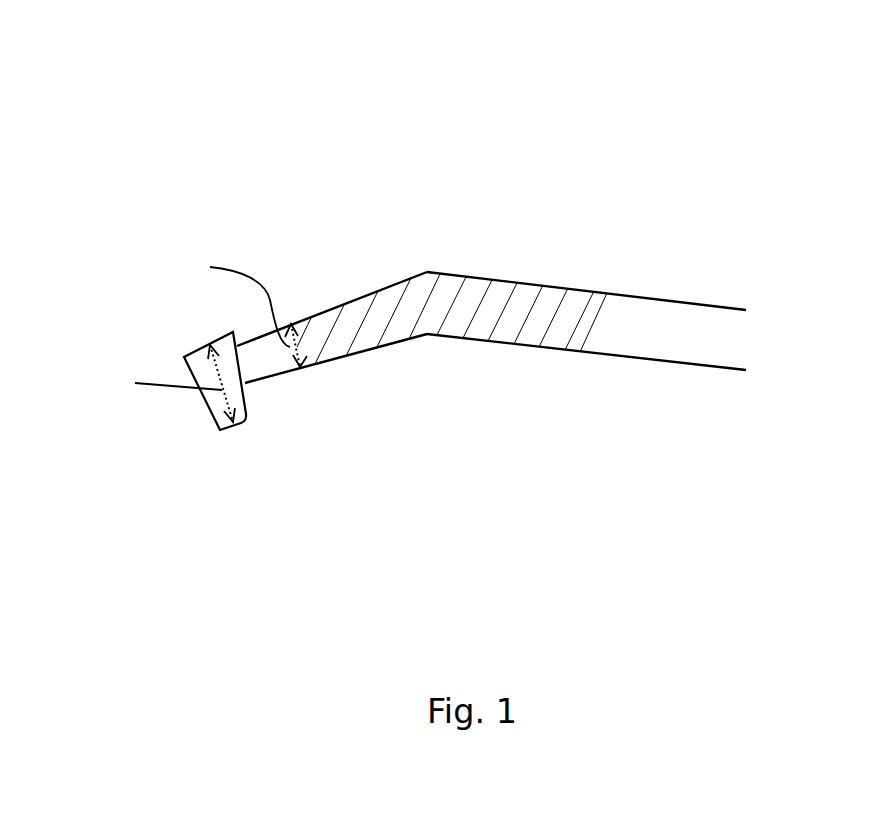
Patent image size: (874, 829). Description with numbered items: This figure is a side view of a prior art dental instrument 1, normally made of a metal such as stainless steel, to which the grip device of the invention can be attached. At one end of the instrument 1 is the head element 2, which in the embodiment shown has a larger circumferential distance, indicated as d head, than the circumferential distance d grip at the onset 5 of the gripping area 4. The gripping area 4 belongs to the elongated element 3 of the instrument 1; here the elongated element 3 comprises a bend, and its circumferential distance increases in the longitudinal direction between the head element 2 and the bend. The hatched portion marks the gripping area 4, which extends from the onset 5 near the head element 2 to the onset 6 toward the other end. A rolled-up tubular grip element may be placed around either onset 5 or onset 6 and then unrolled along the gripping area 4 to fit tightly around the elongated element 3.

The dental instrument 1 is at (714, 250).
The head element 2 is at (200, 377).
The elongated element 3 is at (638, 320).
The gripping area 4 is at (472, 300).
The onset of the gripping area 5 is at (300, 367).
The onset of the gripping area 6 is at (600, 318).